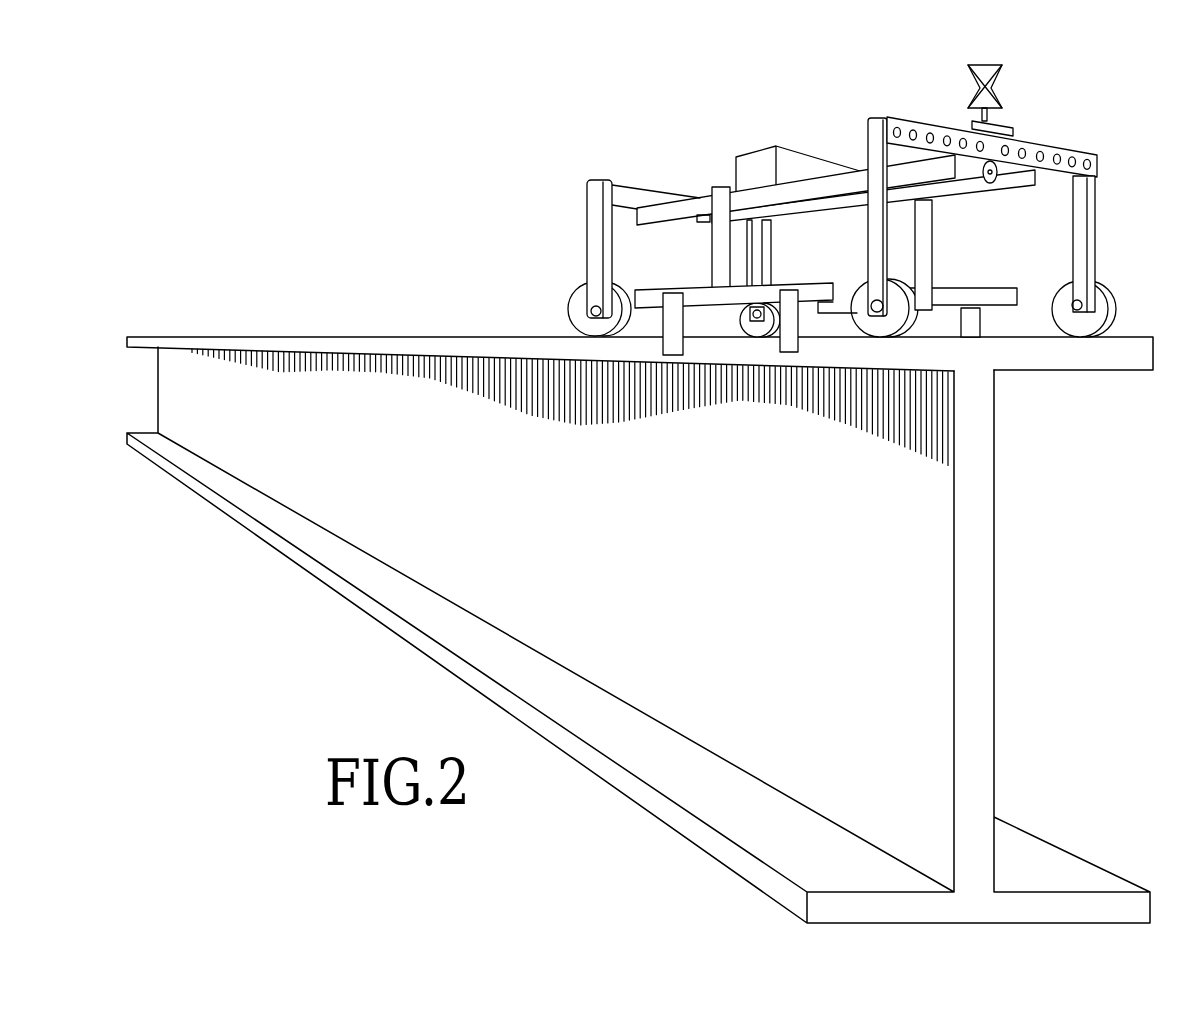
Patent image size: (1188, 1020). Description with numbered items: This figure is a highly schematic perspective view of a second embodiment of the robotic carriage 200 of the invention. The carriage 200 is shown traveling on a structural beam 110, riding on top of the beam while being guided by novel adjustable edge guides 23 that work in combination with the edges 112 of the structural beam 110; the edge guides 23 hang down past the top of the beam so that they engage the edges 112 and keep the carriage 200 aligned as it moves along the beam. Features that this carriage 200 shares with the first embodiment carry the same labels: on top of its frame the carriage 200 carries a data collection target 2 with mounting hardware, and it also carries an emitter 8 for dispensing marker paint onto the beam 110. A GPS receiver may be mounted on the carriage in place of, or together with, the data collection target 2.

The data collection target 2 is at (997, 82).
The emitter 8 is at (976, 174).
The adjustable edge guides 23 is at (673, 325).
The structural beam 110 is at (640, 600).
The edges of the structural beam 112 is at (517, 350).
The robotic carriage 200 is at (870, 218).